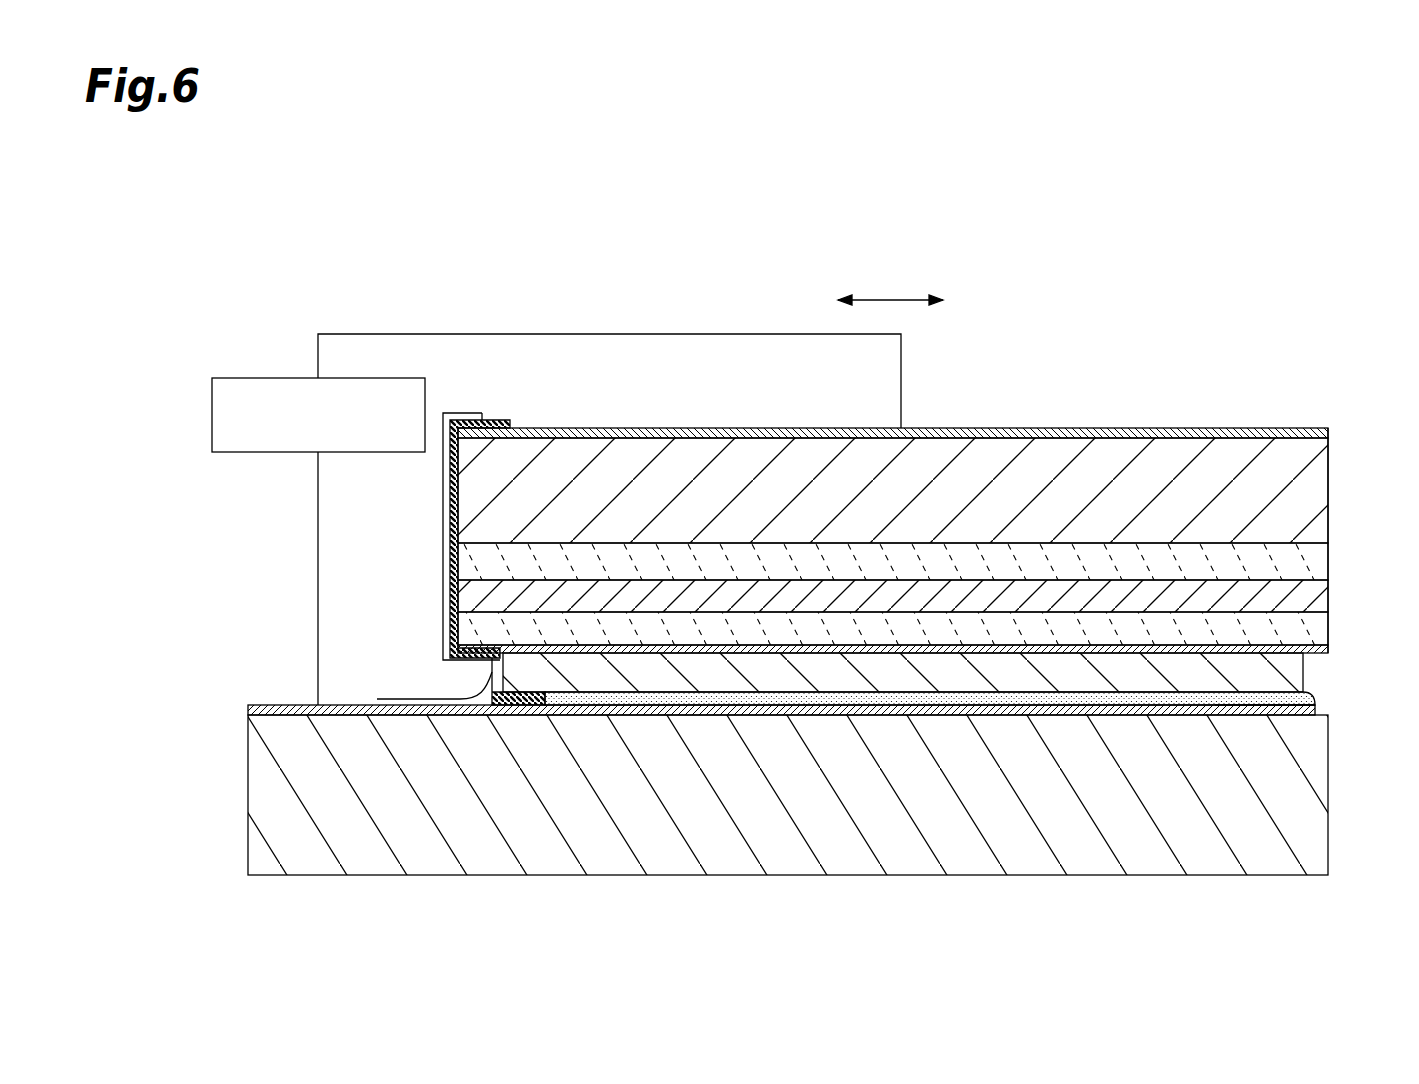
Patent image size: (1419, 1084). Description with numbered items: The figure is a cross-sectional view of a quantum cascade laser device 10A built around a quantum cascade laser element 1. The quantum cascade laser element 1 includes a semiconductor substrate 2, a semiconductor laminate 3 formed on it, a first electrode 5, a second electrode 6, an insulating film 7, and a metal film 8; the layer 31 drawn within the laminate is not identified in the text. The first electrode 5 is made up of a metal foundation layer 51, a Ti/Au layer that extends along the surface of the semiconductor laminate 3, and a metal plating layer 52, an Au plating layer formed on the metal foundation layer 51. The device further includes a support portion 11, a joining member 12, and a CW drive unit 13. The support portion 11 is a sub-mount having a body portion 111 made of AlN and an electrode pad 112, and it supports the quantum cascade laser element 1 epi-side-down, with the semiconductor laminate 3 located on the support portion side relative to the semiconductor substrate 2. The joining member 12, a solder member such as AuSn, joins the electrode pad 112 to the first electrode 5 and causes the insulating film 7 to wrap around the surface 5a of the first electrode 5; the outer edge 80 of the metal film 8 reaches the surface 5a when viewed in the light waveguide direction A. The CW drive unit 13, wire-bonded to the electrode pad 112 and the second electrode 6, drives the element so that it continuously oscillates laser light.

The quantum cascade laser device 10A is at (1226, 326).
The quantum cascade laser element 1 is at (1044, 396).
The semiconductor substrate 2 is at (1325, 482).
The semiconductor laminate 3 is at (1330, 563).
The internal electrode 31 is at (1322, 592).
The first electrode 5 is at (1393, 645).
The metal foundation layer 51 is at (1296, 653).
The metal plating layer 52 is at (1296, 683).
The surface of the first electrode 5a is at (1233, 697).
The second electrode 6 is at (786, 428).
The insulating film 7 is at (452, 482).
The metal film 8 is at (447, 527).
The outer edge of the metal film 80 is at (499, 650).
The support portion 11 is at (1022, 875).
The body portion 111 is at (258, 812).
The electrode pad 112 is at (279, 705).
The joining member 12 is at (933, 700).
The CW drive unit 13 is at (251, 378).
The light waveguide direction A is at (888, 300).